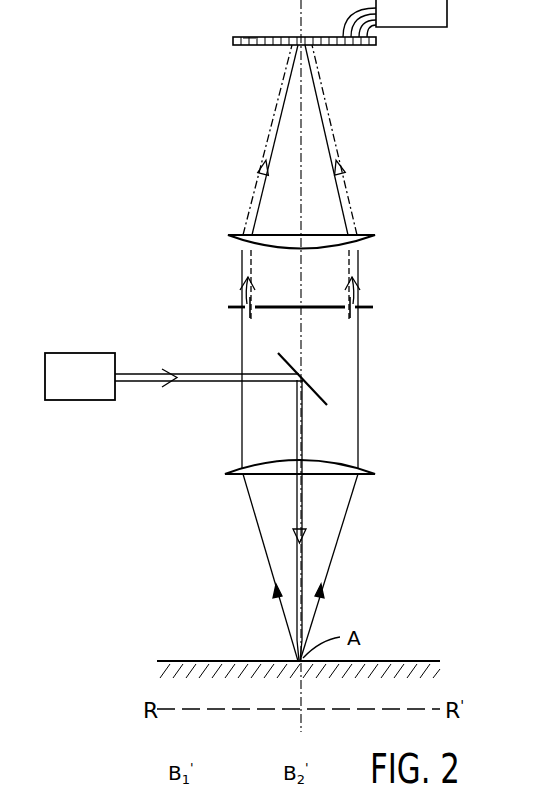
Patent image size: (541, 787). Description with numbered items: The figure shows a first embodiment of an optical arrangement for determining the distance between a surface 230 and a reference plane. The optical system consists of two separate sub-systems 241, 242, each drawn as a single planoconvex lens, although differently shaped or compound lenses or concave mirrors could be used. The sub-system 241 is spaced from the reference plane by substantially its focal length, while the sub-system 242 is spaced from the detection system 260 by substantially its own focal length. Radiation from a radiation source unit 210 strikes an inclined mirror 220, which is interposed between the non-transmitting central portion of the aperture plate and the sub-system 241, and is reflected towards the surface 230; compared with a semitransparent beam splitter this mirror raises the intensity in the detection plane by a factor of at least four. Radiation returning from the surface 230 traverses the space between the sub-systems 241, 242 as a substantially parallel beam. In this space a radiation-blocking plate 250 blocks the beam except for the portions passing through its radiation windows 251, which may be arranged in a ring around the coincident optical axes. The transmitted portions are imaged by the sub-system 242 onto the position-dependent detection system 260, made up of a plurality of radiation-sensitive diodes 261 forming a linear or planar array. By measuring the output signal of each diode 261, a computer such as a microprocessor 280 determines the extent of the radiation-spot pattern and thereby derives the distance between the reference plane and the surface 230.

The radiation source unit 210 is at (96, 392).
The inclined mirror 220 is at (320, 396).
The surface 230 is at (386, 660).
The sub-system 241 is at (362, 472).
The sub-system 242 is at (362, 234).
The radiation-blocking plate 250 is at (368, 302).
The radiation windows 251 is at (246, 316).
The detection system 260 is at (388, 42).
The radiation-sensitive diodes 261 is at (257, 35).
The microprocessor 280 is at (439, 11).